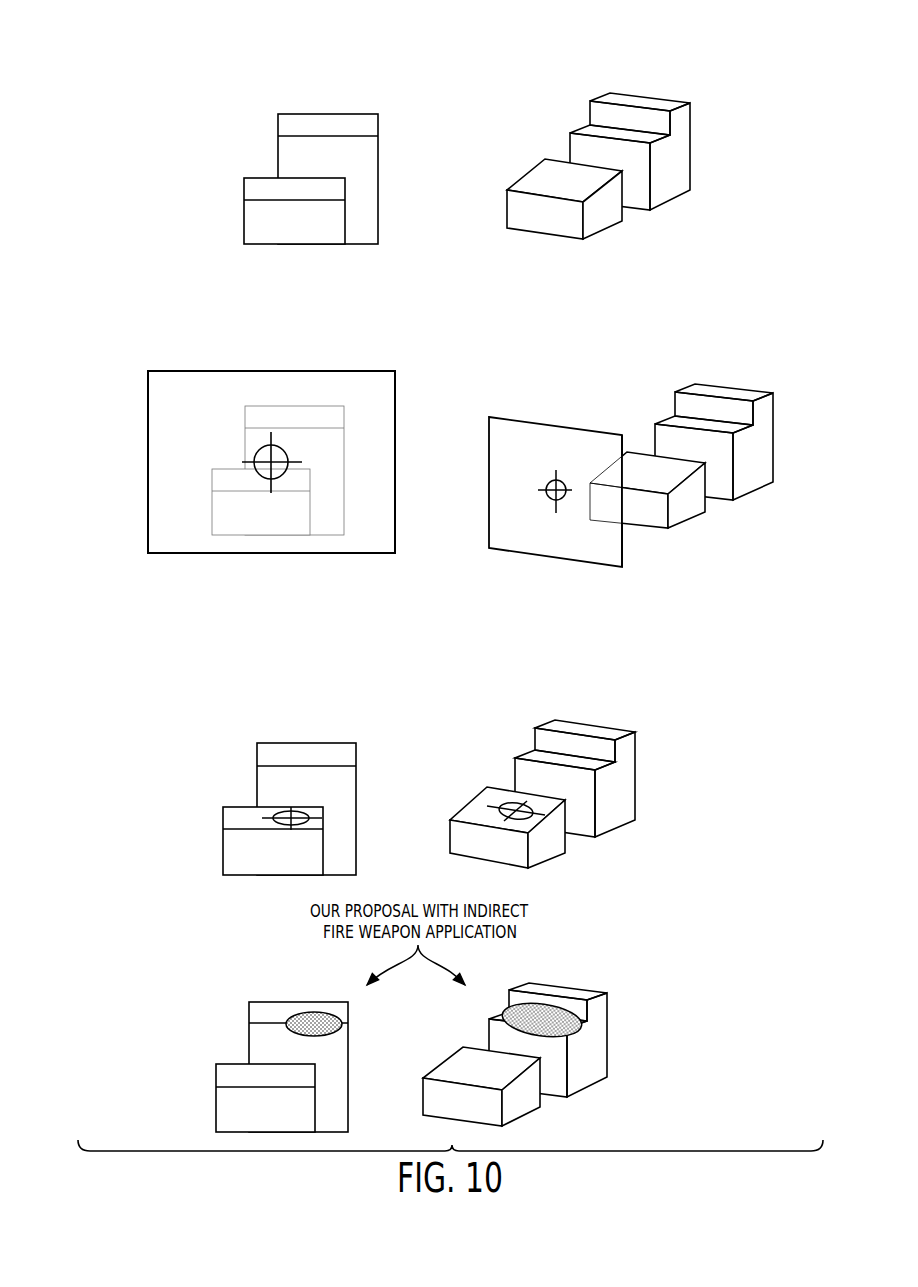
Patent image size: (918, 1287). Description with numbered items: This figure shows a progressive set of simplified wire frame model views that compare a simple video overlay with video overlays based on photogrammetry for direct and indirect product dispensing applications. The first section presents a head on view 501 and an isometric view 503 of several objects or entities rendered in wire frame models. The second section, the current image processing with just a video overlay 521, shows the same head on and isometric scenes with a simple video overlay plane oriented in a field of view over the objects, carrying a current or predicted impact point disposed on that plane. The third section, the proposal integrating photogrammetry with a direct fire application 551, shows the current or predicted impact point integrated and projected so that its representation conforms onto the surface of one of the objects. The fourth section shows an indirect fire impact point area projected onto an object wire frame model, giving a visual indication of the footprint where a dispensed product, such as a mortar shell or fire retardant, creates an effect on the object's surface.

The head on view 501 is at (200, 104).
The isometric view 503 is at (715, 105).
The current IP with just a video overlay 521 is at (547, 362).
The proposal integrating photogrammetry with a direct fire application 551 is at (461, 728).